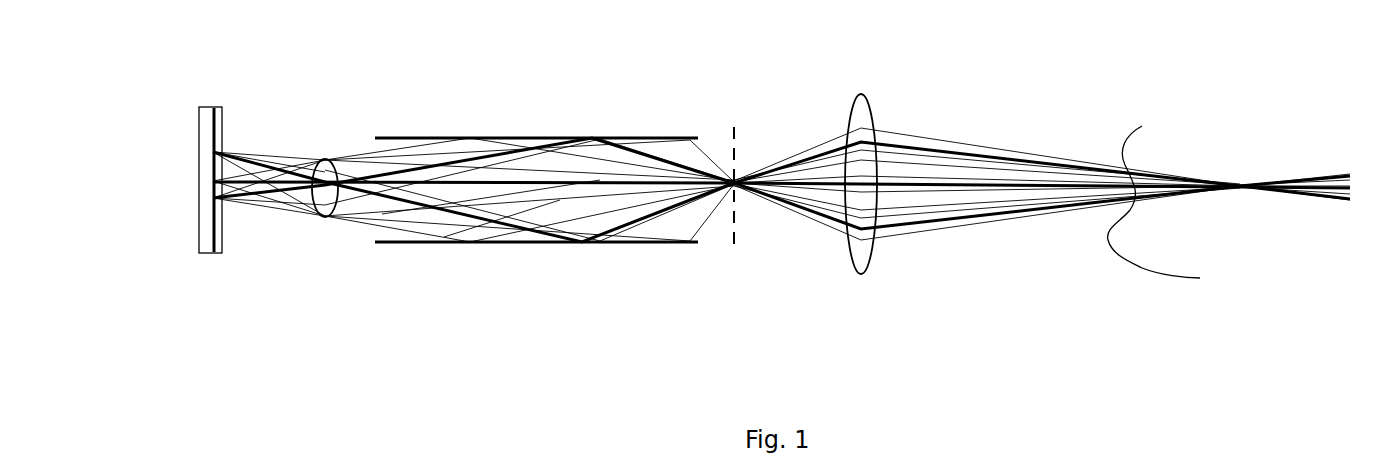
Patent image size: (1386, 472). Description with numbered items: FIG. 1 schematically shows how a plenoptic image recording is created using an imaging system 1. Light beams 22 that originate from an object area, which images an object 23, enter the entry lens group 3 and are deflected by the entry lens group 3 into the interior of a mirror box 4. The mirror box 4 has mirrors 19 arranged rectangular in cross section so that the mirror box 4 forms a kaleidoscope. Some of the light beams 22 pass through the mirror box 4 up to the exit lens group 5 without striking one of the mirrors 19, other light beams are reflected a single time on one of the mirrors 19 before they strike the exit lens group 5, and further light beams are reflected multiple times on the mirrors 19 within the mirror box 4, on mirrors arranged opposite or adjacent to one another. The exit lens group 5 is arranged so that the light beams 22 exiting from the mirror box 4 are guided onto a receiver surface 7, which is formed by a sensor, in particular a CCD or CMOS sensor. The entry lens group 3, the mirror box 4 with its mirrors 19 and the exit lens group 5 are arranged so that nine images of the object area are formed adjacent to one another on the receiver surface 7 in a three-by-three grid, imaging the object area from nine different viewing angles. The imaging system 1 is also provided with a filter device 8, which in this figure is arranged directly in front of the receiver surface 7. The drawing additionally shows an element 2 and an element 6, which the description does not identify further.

The imaging system 1 is at (205, 73).
The first reflecting plate 2 is at (582, 185).
The entry lens group 3 is at (863, 260).
The mirror box 4 is at (603, 248).
The exit lens group 5 is at (323, 160).
The aperture / diaphragm plane 6 is at (730, 249).
The receiver surface 7 is at (200, 240).
The filter device 8 is at (218, 255).
The mirrors 19 is at (444, 237).
The light beams 22 is at (382, 215).
The object 23 is at (1142, 268).